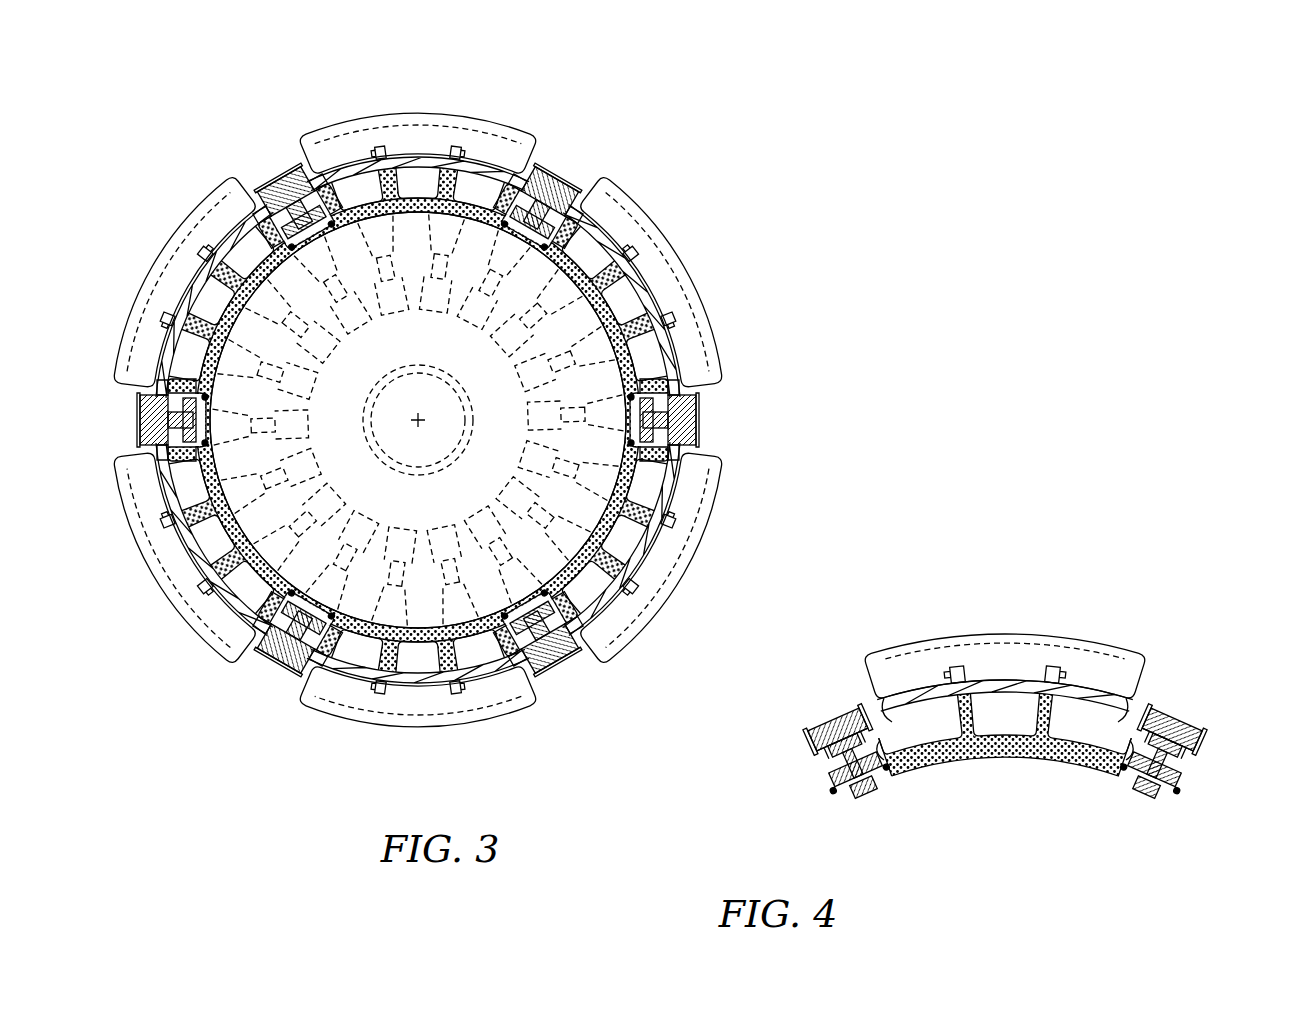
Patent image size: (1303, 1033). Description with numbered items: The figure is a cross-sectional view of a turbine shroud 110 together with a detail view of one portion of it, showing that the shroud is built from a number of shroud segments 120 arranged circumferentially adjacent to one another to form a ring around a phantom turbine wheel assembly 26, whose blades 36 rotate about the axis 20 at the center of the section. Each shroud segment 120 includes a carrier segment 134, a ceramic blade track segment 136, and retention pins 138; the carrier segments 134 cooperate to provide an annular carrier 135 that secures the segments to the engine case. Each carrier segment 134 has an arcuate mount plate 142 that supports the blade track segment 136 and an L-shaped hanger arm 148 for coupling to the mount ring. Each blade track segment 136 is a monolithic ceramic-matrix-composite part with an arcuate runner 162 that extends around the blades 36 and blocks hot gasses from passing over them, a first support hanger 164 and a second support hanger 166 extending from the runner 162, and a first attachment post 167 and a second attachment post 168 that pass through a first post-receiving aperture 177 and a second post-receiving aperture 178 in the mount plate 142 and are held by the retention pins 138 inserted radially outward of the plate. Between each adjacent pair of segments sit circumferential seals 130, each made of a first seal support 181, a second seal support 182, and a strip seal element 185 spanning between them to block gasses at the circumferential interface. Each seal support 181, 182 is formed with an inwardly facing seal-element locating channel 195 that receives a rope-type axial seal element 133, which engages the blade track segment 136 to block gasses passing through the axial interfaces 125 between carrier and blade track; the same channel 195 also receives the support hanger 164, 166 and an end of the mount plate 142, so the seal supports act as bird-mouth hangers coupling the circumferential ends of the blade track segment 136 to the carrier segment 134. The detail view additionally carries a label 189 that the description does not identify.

In FIG. 3, the axis 20 is at (420, 422).
In FIG. 3, the turbine wheel assembly 26 is at (648, 206).
In FIG. 3, the blades 36 is at (372, 262).
In FIG. 3, the turbine shroud 110 is at (672, 128).
In FIG. 3, the shroud segments 120 is at (492, 113).
In FIG. 4, the shroud segments 120 is at (1108, 537).
In FIG. 4, the axial interfaces 125 is at (890, 730).
In FIG. 3, the circumferential seals 130 is at (270, 182).
In FIG. 4, the circumferential seals 130 is at (1185, 700).
In FIG. 4, the axial seal elements 133 is at (845, 774).
In FIG. 3, the carrier segment 134 is at (412, 112).
In FIG. 4, the carrier segment 134 is at (1006, 682).
In FIG. 3, the annular carrier 135 is at (726, 338).
In FIG. 3, the ceramic blade track segment 136 is at (362, 196).
In FIG. 4, the ceramic blade track segment 136 is at (1030, 758).
In FIG. 3, the retention pins 138 is at (375, 146).
In FIG. 4, the retention pins 138 is at (1058, 662).
In FIG. 4, the mount plate 142 is at (1003, 708).
In FIG. 4, the L-shaped hanger arm 148 is at (1040, 646).
In FIG. 4, the arcuate runner 162 is at (1040, 762).
In FIG. 4, the first support hanger 164 is at (960, 758).
In FIG. 4, the second support hanger 166 is at (1060, 762).
In FIG. 4, the first attachment post 167 is at (1000, 762).
In FIG. 4, the second attachment post 168 is at (1085, 752).
In FIG. 4, the first post-receiving aperture 177 is at (985, 690).
In FIG. 4, the second post-receiving aperture 178 is at (1030, 692).
In FIG. 3, the first seal support 181 is at (264, 188).
In FIG. 4, the first seal support 181 is at (1165, 695).
In FIG. 3, the second seal support 182 is at (300, 210).
In FIG. 4, the second seal support 182 is at (855, 720).
In FIG. 3, the seal element 185 is at (281, 172).
In FIG. 4, the seal element 185 is at (870, 738).
In FIG. 4, the opening 189 is at (985, 748).
In FIG. 4, the seal-element locating channel 195 is at (886, 700).